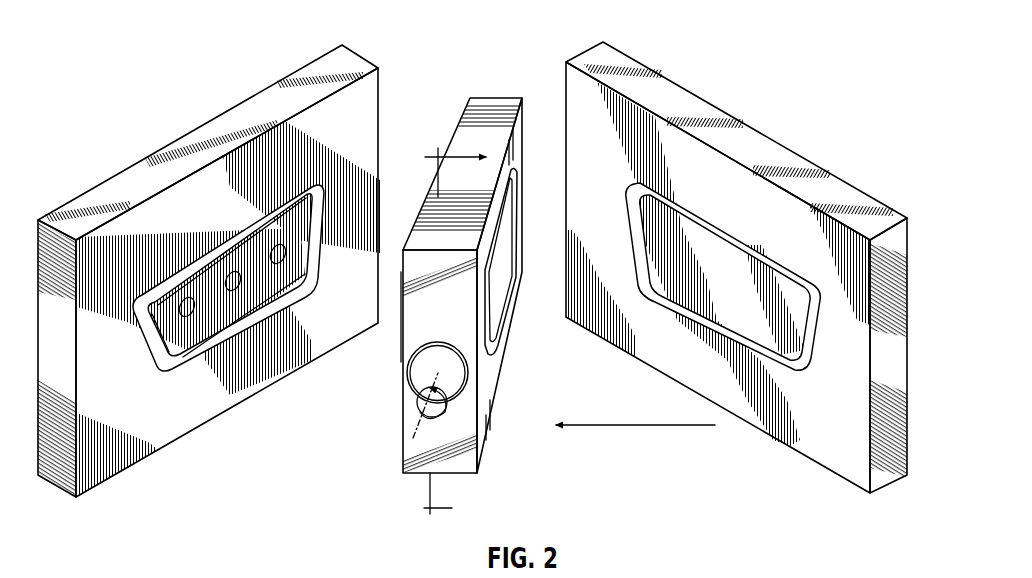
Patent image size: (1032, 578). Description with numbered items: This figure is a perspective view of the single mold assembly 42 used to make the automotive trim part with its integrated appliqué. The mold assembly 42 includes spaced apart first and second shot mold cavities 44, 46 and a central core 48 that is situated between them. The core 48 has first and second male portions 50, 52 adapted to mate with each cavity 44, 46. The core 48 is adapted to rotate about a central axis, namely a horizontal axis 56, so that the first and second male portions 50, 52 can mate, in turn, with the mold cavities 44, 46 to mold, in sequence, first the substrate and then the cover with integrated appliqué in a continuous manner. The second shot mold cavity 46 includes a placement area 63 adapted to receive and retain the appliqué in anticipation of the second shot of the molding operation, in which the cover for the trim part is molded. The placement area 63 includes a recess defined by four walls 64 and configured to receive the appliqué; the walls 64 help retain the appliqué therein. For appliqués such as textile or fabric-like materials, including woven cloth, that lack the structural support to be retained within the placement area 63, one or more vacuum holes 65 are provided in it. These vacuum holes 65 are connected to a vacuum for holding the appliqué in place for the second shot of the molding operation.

The mold assembly 42 is at (470, 41).
The first shot mold cavity 44 is at (664, 292).
The second shot mold cavity 46 is at (143, 372).
The central core 48 is at (491, 106).
The first male portion 50 is at (501, 332).
The second male portion 52 is at (403, 357).
The horizontal axis 56 is at (431, 418).
The placement area 63 is at (247, 295).
The walls 64 is at (286, 294).
The vacuum holes 65 is at (239, 285).